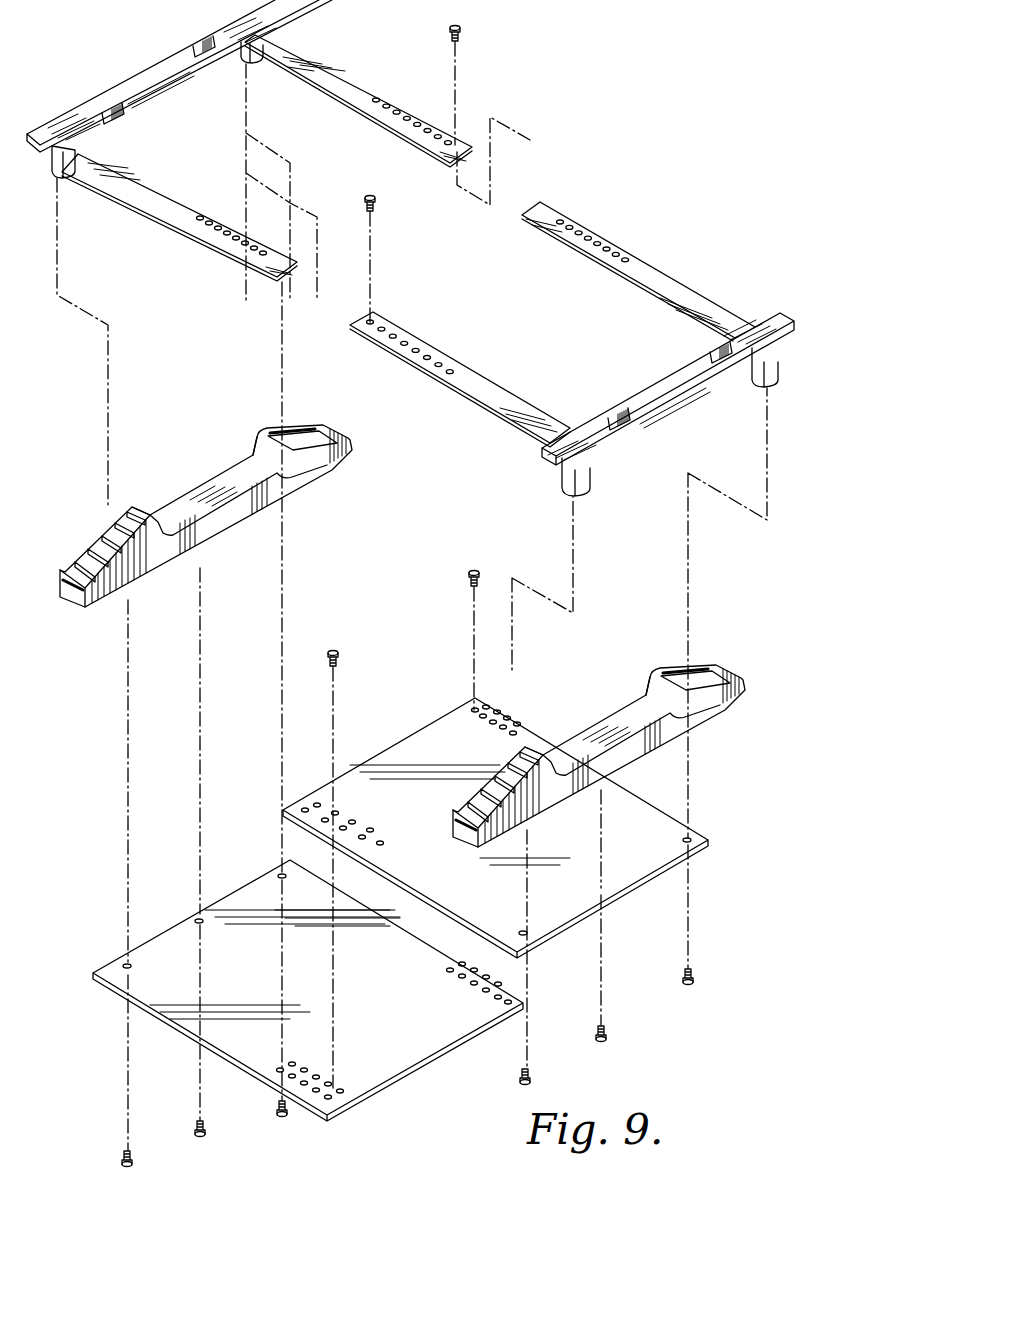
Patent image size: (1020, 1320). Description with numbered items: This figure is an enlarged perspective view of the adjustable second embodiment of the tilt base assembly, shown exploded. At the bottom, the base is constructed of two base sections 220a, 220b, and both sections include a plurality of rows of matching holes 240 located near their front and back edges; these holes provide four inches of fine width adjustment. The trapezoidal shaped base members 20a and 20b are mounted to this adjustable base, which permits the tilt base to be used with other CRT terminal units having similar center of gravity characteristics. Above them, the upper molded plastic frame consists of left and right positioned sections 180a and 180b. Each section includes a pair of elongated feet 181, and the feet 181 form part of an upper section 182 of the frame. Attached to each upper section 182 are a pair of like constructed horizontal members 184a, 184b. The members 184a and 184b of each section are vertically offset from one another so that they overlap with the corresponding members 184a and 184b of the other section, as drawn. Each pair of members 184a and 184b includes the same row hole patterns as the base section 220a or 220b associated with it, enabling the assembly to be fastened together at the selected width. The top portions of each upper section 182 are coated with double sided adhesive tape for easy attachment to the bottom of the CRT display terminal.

The left positioned section 180a is at (160, 47).
The right positioned section 180b is at (633, 435).
The elongated feet 181 is at (258, 62).
The upper section 182 is at (163, 92).
The horizontal member 184a is at (303, 47).
The horizontal member 184b is at (183, 210).
The trapezoidal shaped base member 20a is at (290, 477).
The trapezoidal shaped base member 20b is at (615, 710).
The base section 220a is at (398, 1080).
The base section 220b is at (700, 835).
The matching holes 240 is at (316, 804).